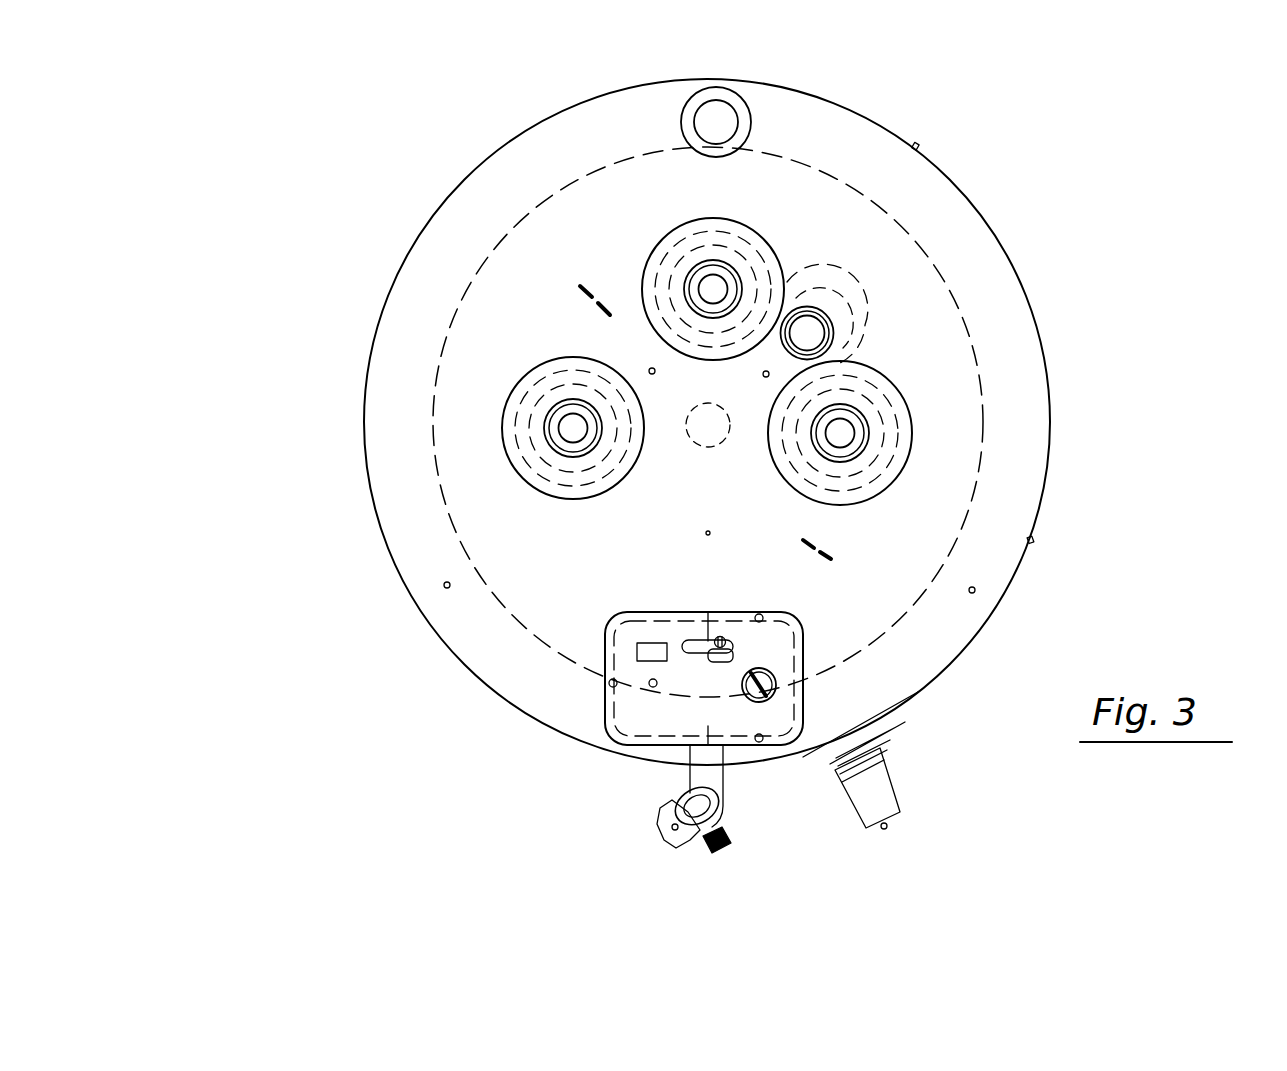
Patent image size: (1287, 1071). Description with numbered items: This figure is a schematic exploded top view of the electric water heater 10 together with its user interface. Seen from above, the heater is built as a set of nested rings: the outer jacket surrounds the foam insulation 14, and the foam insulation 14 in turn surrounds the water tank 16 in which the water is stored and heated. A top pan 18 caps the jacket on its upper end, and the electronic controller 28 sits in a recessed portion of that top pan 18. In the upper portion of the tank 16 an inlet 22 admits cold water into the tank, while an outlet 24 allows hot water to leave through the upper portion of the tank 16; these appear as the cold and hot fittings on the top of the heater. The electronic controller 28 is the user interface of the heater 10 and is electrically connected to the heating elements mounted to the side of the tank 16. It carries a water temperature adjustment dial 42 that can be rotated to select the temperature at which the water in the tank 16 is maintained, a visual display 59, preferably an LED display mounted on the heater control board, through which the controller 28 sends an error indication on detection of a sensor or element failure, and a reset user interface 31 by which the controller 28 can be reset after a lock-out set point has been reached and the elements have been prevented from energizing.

The electric water heater 10 is at (345, 552).
The foam insulation 14 is at (412, 428).
The water tank 16 is at (488, 253).
The top pan 18 is at (473, 173).
The inlet 22 is at (860, 422).
The outlet 24 is at (558, 415).
The electronic controller 28 is at (651, 734).
The reset user interface 31 is at (637, 652).
The water temperature adjustment dial 42 is at (758, 702).
The visual display 59 is at (652, 690).